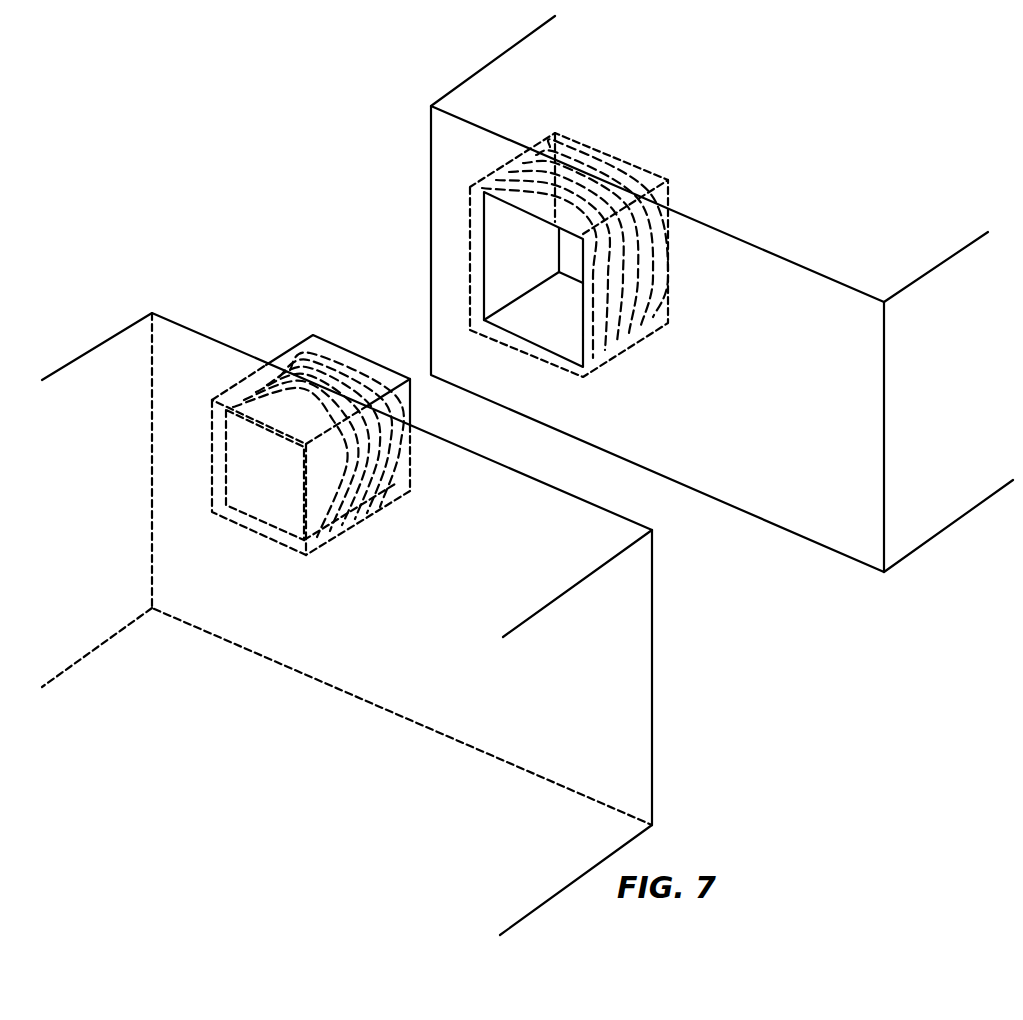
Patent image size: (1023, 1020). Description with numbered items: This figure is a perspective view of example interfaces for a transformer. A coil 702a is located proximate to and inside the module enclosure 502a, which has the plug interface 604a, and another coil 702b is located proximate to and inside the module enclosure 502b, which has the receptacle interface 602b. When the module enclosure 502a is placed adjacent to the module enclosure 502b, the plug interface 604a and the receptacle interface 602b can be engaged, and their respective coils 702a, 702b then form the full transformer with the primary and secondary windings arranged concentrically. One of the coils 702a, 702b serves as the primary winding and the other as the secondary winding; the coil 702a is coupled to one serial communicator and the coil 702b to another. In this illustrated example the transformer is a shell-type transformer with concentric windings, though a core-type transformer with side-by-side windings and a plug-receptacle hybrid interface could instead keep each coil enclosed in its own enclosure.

The module enclosure 502a is at (83, 340).
The module enclosure 502b is at (388, 91).
The plug interface 604a is at (308, 312).
The receptacle interface 602b is at (452, 232).
The coil 702a is at (377, 508).
The coil 702b is at (633, 342).